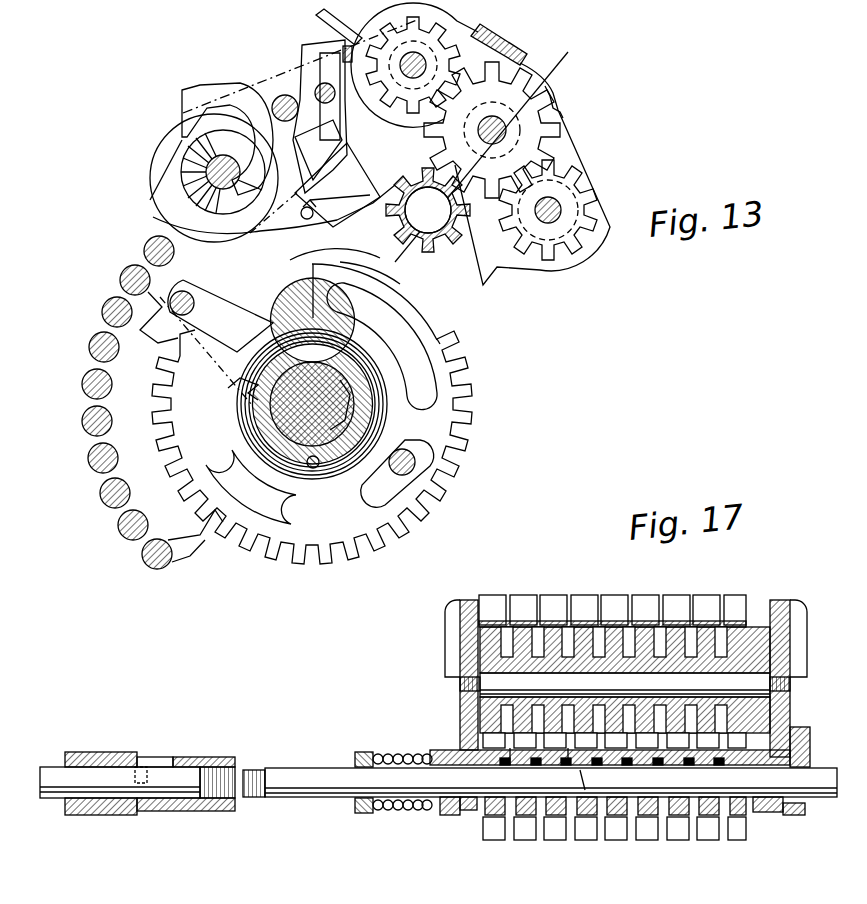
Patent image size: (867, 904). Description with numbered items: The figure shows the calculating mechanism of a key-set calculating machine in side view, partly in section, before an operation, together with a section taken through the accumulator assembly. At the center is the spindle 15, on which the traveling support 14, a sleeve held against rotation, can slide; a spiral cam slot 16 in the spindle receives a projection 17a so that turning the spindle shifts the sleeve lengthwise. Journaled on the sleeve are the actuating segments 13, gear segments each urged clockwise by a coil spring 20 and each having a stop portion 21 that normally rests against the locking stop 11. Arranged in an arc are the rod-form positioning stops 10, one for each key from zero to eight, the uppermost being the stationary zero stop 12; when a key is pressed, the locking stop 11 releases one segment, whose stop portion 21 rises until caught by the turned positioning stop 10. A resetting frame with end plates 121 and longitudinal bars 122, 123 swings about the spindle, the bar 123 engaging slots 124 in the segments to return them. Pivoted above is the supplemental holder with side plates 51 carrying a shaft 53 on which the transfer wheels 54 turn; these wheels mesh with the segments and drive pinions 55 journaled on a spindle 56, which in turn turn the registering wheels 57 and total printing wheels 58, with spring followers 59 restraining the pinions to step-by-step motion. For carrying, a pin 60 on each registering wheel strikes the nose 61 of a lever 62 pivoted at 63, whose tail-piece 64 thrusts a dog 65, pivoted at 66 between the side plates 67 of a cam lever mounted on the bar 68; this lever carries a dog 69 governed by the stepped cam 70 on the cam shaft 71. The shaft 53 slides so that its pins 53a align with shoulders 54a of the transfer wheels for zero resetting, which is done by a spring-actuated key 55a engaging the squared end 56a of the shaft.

In FIG. 13, the positioning stop 10 is at (118, 460).
In FIG. 13, the locking stop 11 is at (157, 570).
In FIG. 13, the zero stop 12 is at (175, 253).
In FIG. 13, the actuating segment 13 is at (452, 455).
In FIG. 13, the traveling support 14 is at (318, 470).
In FIG. 13, the spindle 15 is at (312, 395).
In FIG. 13, the cam slot 16 is at (355, 418).
In FIG. 13, the projection 17a is at (478, 157).
In FIG. 13, the coil spring 20 is at (232, 398).
In FIG. 13, the stop portion 21 is at (165, 322).
In FIG. 13, the side plate 51 is at (498, 268).
In FIG. 13, the shaft 53 is at (440, 235).
In FIG. 17, the shaft 53 is at (470, 800).
In FIG. 13, the pin 53a is at (462, 230).
In FIG. 17, the pin 53a is at (568, 765).
In FIG. 17, the transfer wheel 54 is at (510, 765).
In FIG. 13, the shoulder 54a is at (385, 225).
In FIG. 17, the shoulder 54a is at (585, 790).
In FIG. 13, the pinion 55 is at (510, 128).
In FIG. 17, the pinion 55 is at (747, 680).
In FIG. 17, the key 55a is at (205, 762).
In FIG. 13, the spindle 56 is at (506, 134).
In FIG. 17, the spindle 56 is at (770, 665).
In FIG. 17, the squared end 56a is at (262, 772).
In FIG. 13, the registering wheel 57 is at (470, 40).
In FIG. 13, the total printing wheel 58 is at (592, 185).
In FIG. 13, the spring follower 59 is at (557, 93).
In FIG. 17, the spring follower 59 is at (660, 600).
In FIG. 13, the pin 60 is at (330, 20).
In FIG. 13, the nose 61 is at (349, 45).
In FIG. 13, the lever 62 is at (322, 88).
In FIG. 13, the pivot 63 is at (283, 100).
In FIG. 13, the tail-piece 64 is at (345, 140).
In FIG. 13, the dog 65 is at (348, 158).
In FIG. 13, the pivot 66 is at (308, 222).
In FIG. 13, the side plate 67 is at (290, 225).
In FIG. 13, the bar 68 is at (268, 88).
In FIG. 13, the dog 69 is at (190, 130).
In FIG. 13, the stepped cam 70 is at (200, 170).
In FIG. 13, the cam shaft 71 is at (226, 160).
In FIG. 13, the end plate 121 is at (220, 316).
In FIG. 13, the longitudinal bar 122 is at (192, 298).
In FIG. 13, the longitudinal bar 123 is at (412, 475).
In FIG. 13, the slot 124 is at (410, 355).